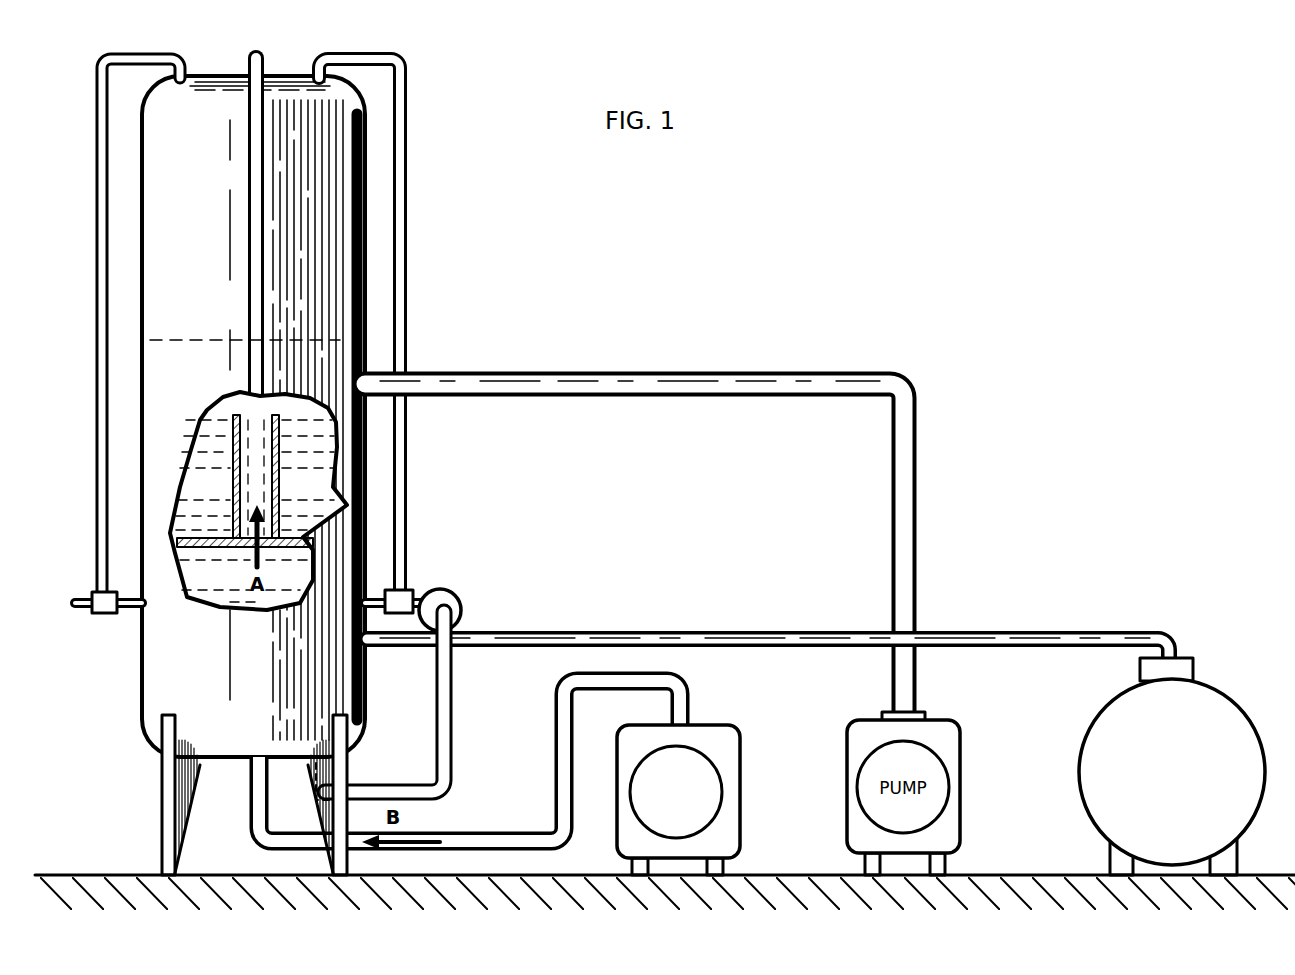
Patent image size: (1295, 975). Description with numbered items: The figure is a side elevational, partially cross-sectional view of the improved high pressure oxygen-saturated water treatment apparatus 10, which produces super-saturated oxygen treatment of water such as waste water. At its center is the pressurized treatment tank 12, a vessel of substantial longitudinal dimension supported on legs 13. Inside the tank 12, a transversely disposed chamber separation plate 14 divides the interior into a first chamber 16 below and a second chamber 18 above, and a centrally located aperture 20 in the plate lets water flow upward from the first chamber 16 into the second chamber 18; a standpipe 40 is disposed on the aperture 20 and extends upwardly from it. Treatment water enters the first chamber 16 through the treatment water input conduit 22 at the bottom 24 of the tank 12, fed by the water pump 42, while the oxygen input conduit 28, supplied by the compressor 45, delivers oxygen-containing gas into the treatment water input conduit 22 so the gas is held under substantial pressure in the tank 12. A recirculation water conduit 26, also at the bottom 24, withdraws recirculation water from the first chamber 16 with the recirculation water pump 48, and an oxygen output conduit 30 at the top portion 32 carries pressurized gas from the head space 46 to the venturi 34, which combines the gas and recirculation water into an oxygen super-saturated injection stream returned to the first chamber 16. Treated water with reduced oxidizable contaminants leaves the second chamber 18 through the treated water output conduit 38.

The high pressure oxygen-saturated water treatment apparatus 10 is at (529, 351).
The pressurized treatment tank 12 is at (365, 237).
The legs 13 is at (162, 797).
The chamber separation plate 14 is at (367, 476).
The first chamber 16 is at (245, 581).
The second chamber 18 is at (255, 475).
The aperture 20 is at (278, 527).
The treatment water input conduit 22 is at (267, 845).
The bottom 24 is at (227, 767).
The recirculation water conduit 26 is at (453, 700).
The oxygen input conduit 28 is at (547, 834).
The oxygen output conduit 30 is at (408, 94).
The top portion 32 is at (276, 70).
The venturi 34 is at (459, 580).
The treated water output conduit 38 is at (455, 374).
The standpipe 40 is at (218, 408).
The water pump 42 is at (728, 737).
The compressor 45 is at (1228, 707).
The head space 46 is at (196, 112).
The recirculation water pump 48 is at (463, 606).